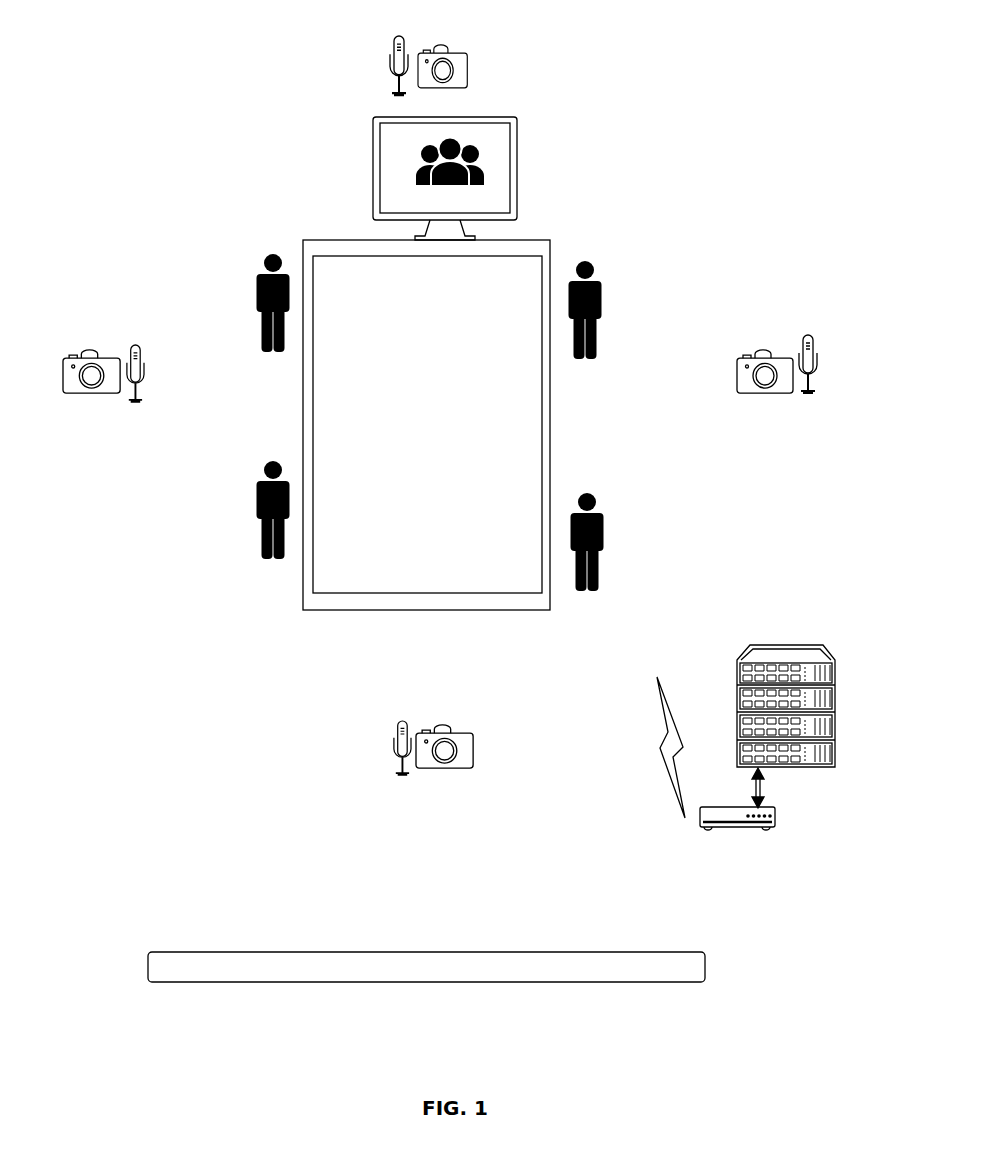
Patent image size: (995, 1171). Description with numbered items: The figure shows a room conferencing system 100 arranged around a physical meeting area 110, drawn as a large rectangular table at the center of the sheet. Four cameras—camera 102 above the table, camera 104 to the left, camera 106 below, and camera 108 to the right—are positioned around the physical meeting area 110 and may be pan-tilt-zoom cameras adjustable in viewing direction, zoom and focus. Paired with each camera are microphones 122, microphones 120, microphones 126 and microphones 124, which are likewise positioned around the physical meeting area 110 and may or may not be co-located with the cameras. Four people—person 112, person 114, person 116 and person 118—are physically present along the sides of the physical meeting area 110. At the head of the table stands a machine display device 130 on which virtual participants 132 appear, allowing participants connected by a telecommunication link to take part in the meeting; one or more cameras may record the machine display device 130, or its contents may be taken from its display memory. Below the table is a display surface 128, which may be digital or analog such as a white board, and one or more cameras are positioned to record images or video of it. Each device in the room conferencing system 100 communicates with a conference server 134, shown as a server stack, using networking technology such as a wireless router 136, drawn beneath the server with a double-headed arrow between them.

The room conferencing system 100 is at (788, 72).
The camera 102 is at (467, 70).
The camera 104 is at (92, 394).
The camera 106 is at (473, 750).
The camera 108 is at (770, 354).
The physical meeting area 110 is at (440, 578).
The person 112 is at (258, 292).
The person 114 is at (258, 498).
The person 116 is at (603, 310).
The person 118 is at (605, 540).
The microphones 120 is at (136, 344).
The microphones 122 is at (388, 62).
The microphones 124 is at (809, 400).
The microphones 126 is at (393, 744).
The display surface 128 is at (705, 967).
The machine display device 130 is at (517, 170).
The virtual participants 132 is at (420, 168).
The conference server 134 is at (788, 644).
The wireless router 136 is at (757, 830).